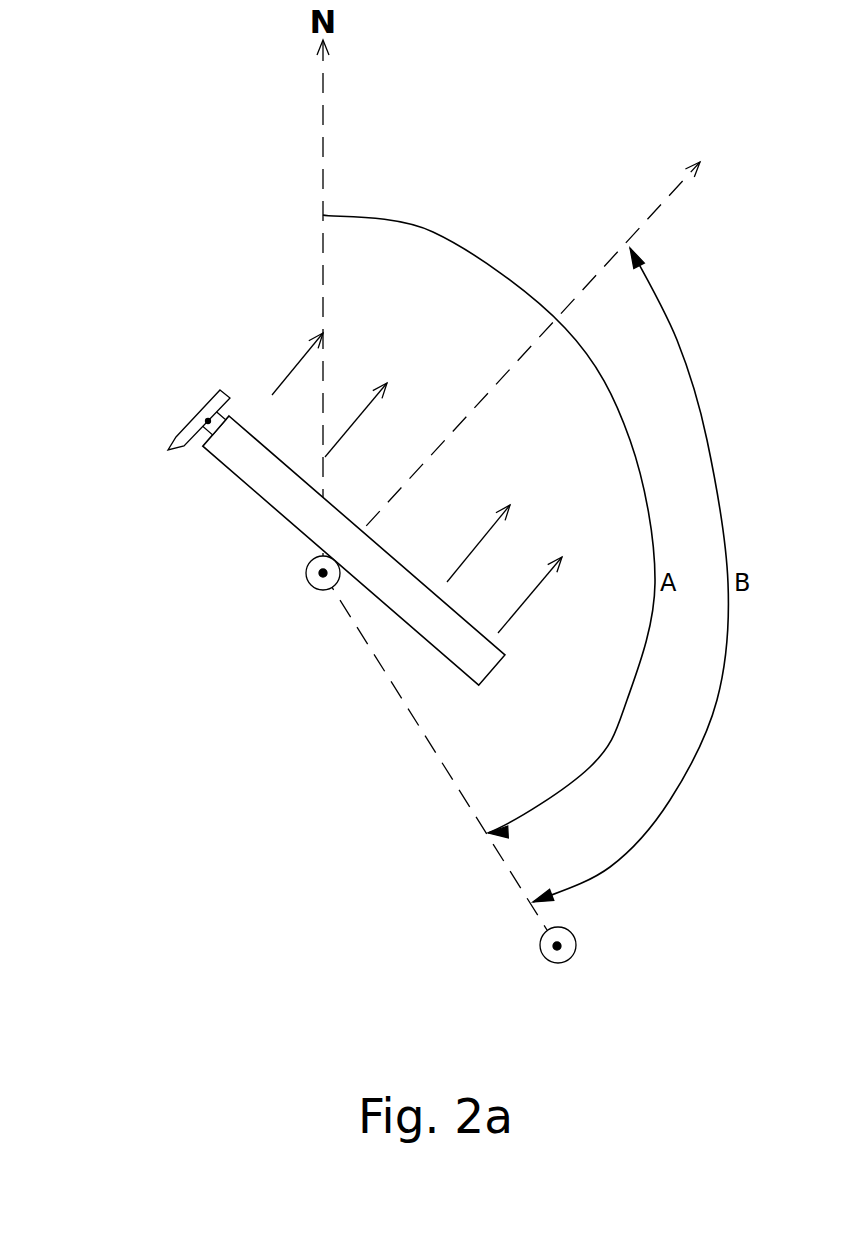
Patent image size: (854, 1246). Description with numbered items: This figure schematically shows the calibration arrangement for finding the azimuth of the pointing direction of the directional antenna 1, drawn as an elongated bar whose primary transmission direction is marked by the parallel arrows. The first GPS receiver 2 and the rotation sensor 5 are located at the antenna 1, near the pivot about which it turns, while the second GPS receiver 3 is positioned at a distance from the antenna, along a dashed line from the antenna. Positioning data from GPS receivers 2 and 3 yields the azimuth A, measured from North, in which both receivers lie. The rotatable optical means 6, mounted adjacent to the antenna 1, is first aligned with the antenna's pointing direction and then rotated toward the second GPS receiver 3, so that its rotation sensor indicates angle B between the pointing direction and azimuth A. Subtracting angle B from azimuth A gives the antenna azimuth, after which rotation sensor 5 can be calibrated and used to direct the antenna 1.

The directional antenna 1 is at (242, 483).
The optical means 6 is at (184, 424).
The first GPS receiver 2 is at (288, 607).
The rotation sensor 5 is at (310, 586).
The second GPS receiver 3 is at (543, 955).